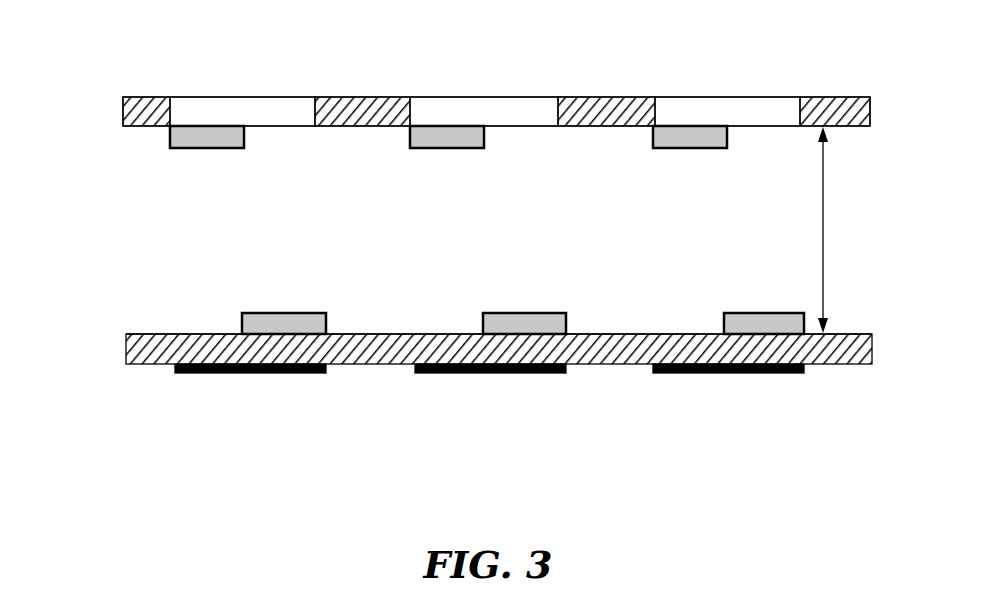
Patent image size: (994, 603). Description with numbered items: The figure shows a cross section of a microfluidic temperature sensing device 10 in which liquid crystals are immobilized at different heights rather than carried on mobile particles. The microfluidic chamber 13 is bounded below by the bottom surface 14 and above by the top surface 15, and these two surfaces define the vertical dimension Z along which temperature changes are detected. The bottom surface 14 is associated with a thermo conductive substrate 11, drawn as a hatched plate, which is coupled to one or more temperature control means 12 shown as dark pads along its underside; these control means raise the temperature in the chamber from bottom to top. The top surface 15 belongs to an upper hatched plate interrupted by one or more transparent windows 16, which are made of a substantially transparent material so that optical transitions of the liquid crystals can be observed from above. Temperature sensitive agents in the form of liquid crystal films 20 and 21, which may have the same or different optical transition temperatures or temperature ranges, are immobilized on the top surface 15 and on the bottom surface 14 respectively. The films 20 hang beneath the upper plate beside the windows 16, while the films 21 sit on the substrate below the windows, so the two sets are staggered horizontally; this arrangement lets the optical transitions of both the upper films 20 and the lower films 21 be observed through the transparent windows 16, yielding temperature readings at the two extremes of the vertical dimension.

The sensor assembly 10 is at (118, 392).
The thermo conductive substrate 11 is at (855, 352).
The temperature control means 12 is at (250, 373).
The microfluidic chamber 13 is at (190, 228).
The bottom surface 14 is at (167, 334).
The top surface 15 is at (152, 127).
The transparent window 16 is at (243, 110).
The temperature sensitive agent 20 is at (456, 148).
The temperature sensitive agent 21 is at (512, 312).